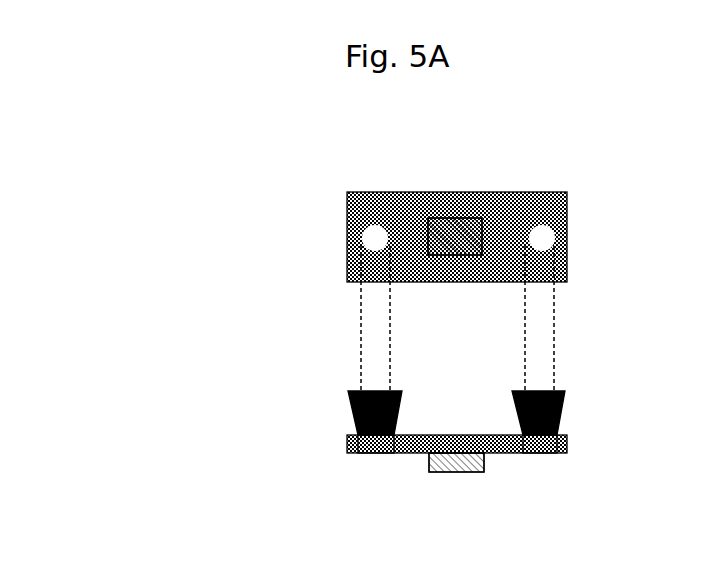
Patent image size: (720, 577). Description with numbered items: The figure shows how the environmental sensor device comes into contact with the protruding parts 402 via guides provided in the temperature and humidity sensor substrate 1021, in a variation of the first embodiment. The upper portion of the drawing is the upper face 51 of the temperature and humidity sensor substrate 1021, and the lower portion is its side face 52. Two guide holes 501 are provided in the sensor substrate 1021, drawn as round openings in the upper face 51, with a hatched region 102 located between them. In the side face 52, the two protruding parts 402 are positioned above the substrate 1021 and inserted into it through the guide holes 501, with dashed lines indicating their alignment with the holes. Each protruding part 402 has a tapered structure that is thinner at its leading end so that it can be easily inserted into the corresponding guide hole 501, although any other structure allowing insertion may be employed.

The upper face of the temperature and humidity sensor substrate 51 is at (296, 237).
The side face of the temperature and humidity sensor substrate 52 is at (296, 434).
The guide holes 501 is at (462, 350).
The bonding region 102 is at (464, 344).
The temperature and humidity sensor substrate 1021 is at (414, 329).
The protruding parts 402 is at (454, 413).